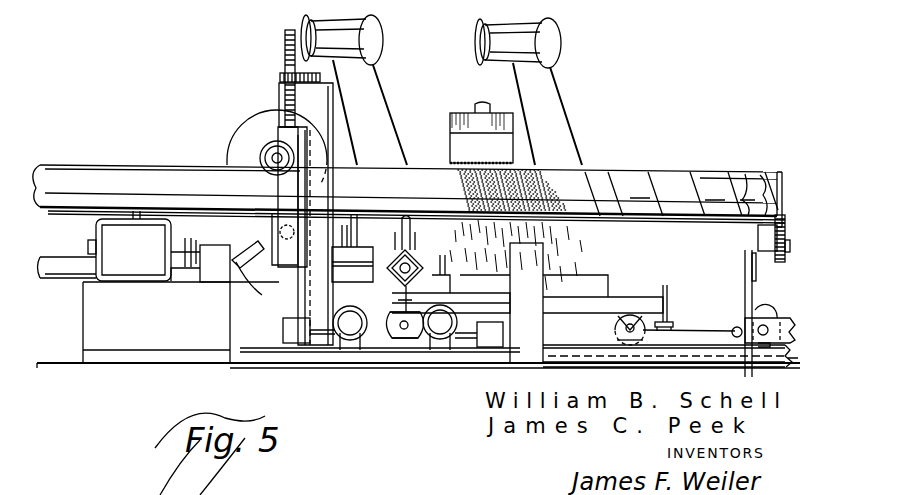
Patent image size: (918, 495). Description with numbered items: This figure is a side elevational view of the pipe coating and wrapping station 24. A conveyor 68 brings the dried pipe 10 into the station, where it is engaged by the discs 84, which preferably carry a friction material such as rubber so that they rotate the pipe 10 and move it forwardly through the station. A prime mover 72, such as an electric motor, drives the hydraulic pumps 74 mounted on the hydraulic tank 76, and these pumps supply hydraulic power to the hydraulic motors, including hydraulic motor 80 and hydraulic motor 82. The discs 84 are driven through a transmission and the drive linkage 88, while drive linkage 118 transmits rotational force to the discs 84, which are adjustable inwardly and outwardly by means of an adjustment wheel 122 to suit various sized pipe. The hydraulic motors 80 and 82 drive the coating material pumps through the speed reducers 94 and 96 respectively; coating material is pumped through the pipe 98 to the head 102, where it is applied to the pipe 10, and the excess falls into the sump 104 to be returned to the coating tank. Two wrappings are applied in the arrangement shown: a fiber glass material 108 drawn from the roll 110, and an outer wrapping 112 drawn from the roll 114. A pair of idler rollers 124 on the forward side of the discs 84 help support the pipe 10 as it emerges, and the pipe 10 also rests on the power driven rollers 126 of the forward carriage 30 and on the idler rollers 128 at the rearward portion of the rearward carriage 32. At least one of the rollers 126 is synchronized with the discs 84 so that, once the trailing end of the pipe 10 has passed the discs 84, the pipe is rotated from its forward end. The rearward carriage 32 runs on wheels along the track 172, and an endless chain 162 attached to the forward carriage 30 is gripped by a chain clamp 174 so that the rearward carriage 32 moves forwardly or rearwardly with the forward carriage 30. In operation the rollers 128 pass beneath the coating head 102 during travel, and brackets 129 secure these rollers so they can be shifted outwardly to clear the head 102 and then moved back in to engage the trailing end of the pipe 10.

The pipe 10 is at (88, 165).
The pipe coating and wrapping station 24 is at (410, 142).
The forward carriage 30 is at (755, 298).
The rearward carriage 32 is at (612, 297).
The conveyor 68 is at (60, 272).
The prime mover 72 is at (143, 256).
The hydraulic pumps 74 is at (212, 244).
The hydraulic tank 76 is at (163, 323).
The hydraulic motor 80 is at (283, 328).
The hydraulic motor 82 is at (500, 347).
The discs 84 is at (262, 112).
The drive linkage 88 is at (254, 290).
The speed reducer 94 is at (350, 347).
The speed reducer 96 is at (440, 347).
The pipe 98 is at (481, 102).
The head 102 is at (492, 157).
The sump 104 is at (598, 275).
The fiber glass material 108 is at (383, 82).
The roll 110 is at (372, 40).
The outer wrapping 112 is at (548, 101).
The roll 114 is at (548, 38).
The drive linkage 118 is at (262, 212).
The adjustment wheel 122 is at (280, 78).
The idler rollers 124 is at (359, 235).
The power driven rollers 126 is at (762, 237).
The idler rollers 128 is at (412, 245).
The brackets 129 is at (394, 275).
The endless chain 162 is at (716, 330).
The track 172 is at (582, 363).
The chain clamp 174 is at (668, 293).